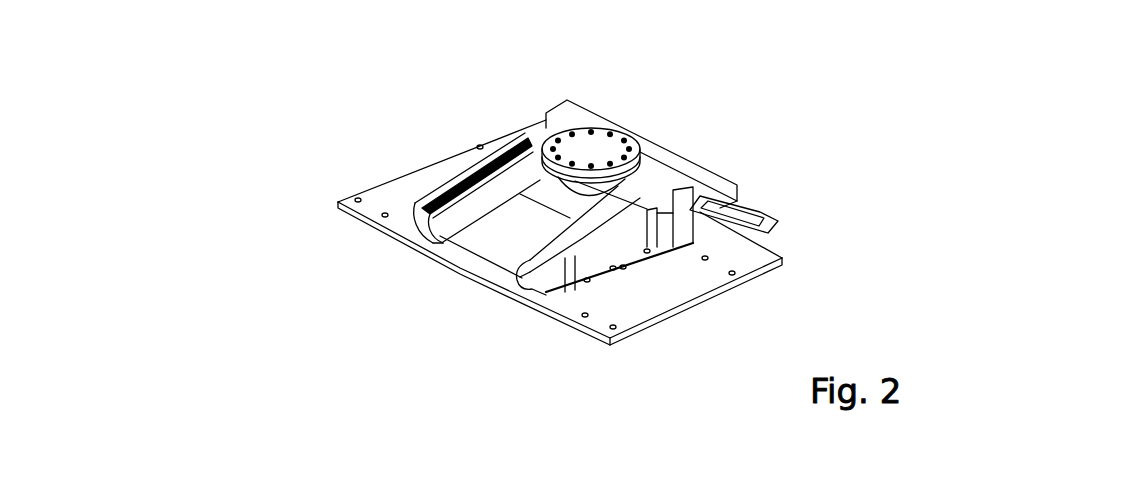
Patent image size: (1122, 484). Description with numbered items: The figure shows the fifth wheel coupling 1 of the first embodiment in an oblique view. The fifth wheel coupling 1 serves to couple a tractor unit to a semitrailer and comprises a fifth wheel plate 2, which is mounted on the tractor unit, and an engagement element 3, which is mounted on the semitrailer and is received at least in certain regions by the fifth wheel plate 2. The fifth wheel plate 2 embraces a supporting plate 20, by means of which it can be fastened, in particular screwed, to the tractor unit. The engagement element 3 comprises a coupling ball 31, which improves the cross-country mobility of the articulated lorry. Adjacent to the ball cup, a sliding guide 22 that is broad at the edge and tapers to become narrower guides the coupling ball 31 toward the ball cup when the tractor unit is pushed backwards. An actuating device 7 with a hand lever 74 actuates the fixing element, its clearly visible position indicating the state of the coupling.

The fifth wheel coupling 1 is at (208, 59).
The fifth wheel plate 2 is at (535, 182).
The engagement element 3 is at (593, 150).
The actuating device 7 is at (740, 208).
The hand lever 74 is at (734, 214).
The supporting plate 20 is at (680, 285).
The sliding guide 22 is at (492, 245).
The coupling ball 31 is at (562, 186).